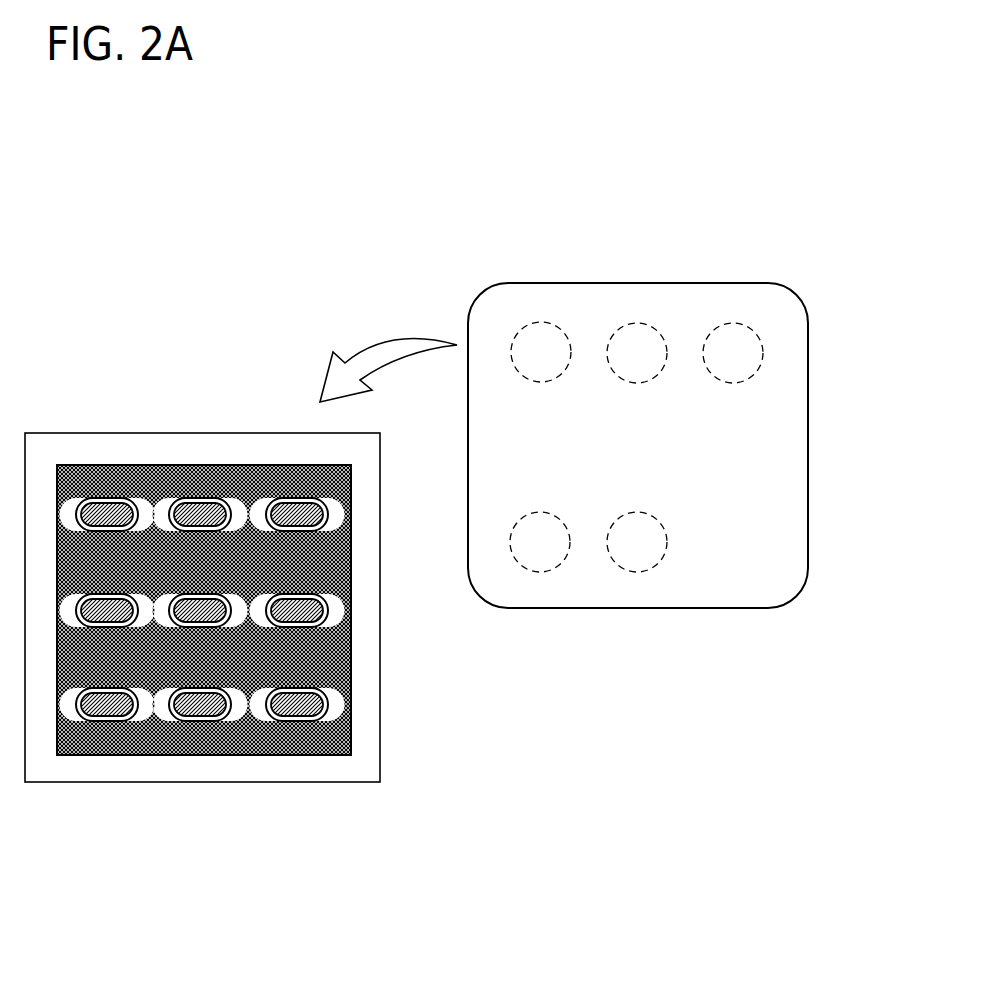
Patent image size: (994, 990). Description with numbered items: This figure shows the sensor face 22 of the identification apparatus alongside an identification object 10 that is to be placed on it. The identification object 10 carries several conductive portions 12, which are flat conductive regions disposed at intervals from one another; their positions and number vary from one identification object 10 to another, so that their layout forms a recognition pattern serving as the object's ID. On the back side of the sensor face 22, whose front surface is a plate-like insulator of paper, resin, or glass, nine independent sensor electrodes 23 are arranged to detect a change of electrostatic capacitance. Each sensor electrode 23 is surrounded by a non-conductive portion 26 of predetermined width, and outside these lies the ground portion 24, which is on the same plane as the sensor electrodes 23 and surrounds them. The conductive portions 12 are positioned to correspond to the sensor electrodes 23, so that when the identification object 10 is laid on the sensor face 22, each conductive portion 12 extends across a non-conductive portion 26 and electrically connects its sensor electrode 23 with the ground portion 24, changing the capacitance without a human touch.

The identification object 10 is at (773, 641).
The conductive portions 12 is at (547, 323).
The sensor face 22 is at (372, 765).
The sensor electrodes 23 is at (297, 716).
The ground portion 24 is at (352, 650).
The non-conductive portions 26 is at (267, 497).